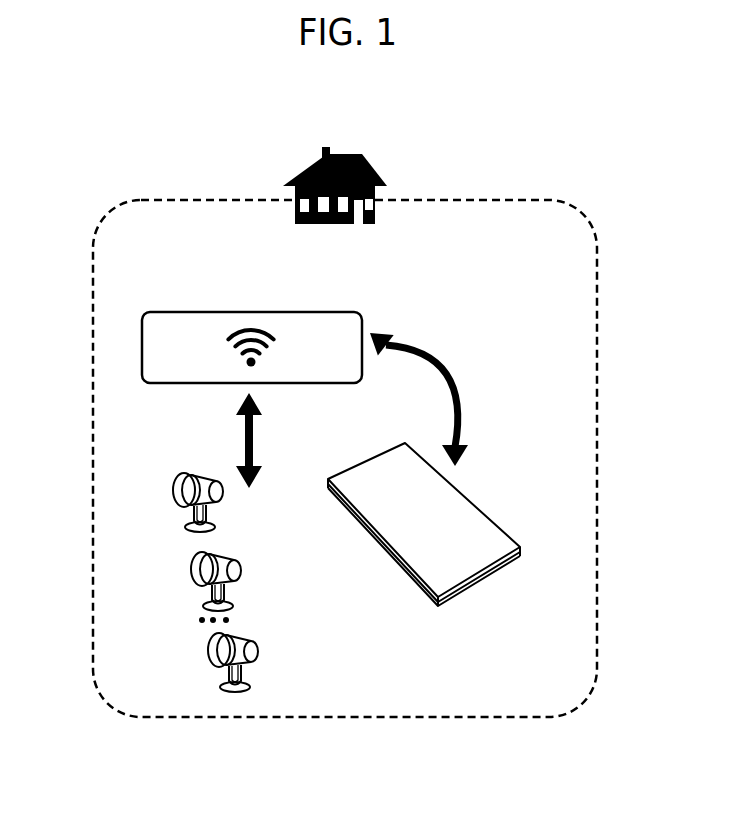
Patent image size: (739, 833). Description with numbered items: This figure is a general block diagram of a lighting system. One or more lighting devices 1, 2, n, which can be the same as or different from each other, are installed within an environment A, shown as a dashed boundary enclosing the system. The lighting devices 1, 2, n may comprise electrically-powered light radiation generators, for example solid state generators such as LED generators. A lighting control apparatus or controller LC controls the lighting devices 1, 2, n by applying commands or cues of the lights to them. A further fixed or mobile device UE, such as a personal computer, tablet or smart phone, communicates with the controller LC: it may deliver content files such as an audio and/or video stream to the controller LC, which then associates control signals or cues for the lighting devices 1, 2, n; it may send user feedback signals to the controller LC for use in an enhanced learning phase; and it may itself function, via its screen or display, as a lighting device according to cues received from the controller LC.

The environment A is at (540, 200).
The lighting control apparatus or controller LC is at (153, 358).
The fixed or mobile device UE is at (478, 494).
The lighting device 1 is at (177, 483).
The lighting device 2 is at (195, 566).
The lighting device n is at (210, 645).